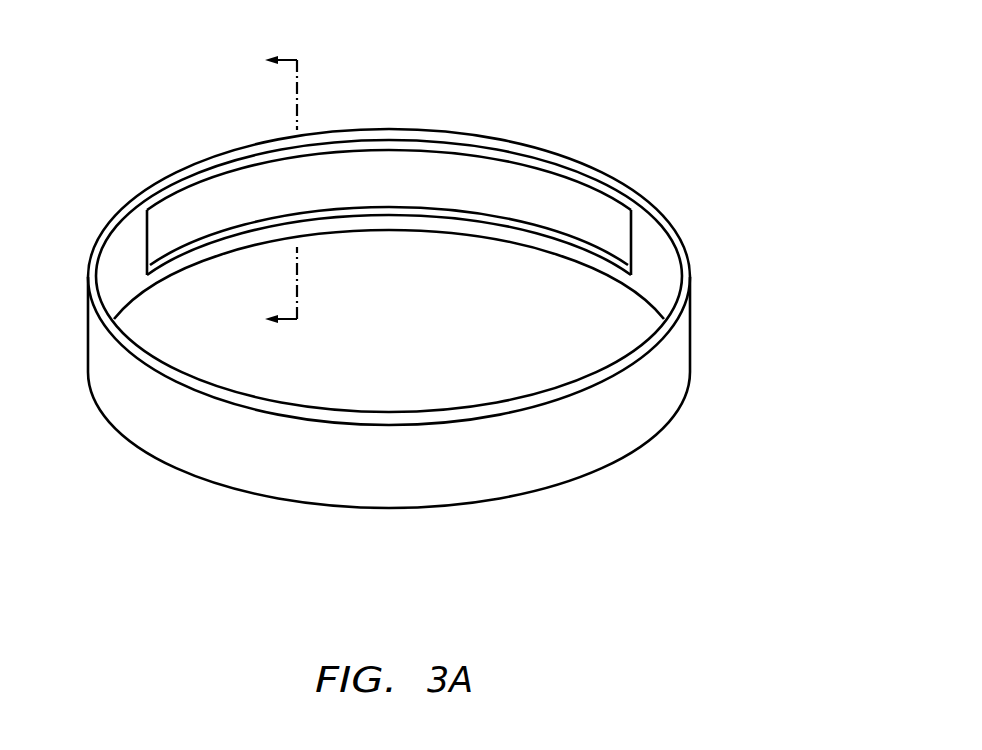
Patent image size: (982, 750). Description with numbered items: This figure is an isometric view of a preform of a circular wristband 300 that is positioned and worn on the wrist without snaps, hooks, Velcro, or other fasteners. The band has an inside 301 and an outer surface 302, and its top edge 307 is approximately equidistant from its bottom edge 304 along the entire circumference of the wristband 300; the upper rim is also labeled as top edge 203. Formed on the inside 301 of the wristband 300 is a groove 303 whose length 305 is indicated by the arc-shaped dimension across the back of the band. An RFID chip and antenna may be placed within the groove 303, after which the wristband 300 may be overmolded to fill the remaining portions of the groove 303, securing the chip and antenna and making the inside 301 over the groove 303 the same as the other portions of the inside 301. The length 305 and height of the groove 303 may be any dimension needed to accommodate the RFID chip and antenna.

The wristband 300 is at (764, 30).
The inside of wristband 301 is at (648, 238).
The ring band housing 302 is at (652, 405).
The groove 303 is at (462, 190).
The bottom edge 304 is at (190, 474).
The length of groove 305 is at (147, 167).
The top edge 307 is at (168, 372).
The top edge 203 is at (533, 398).